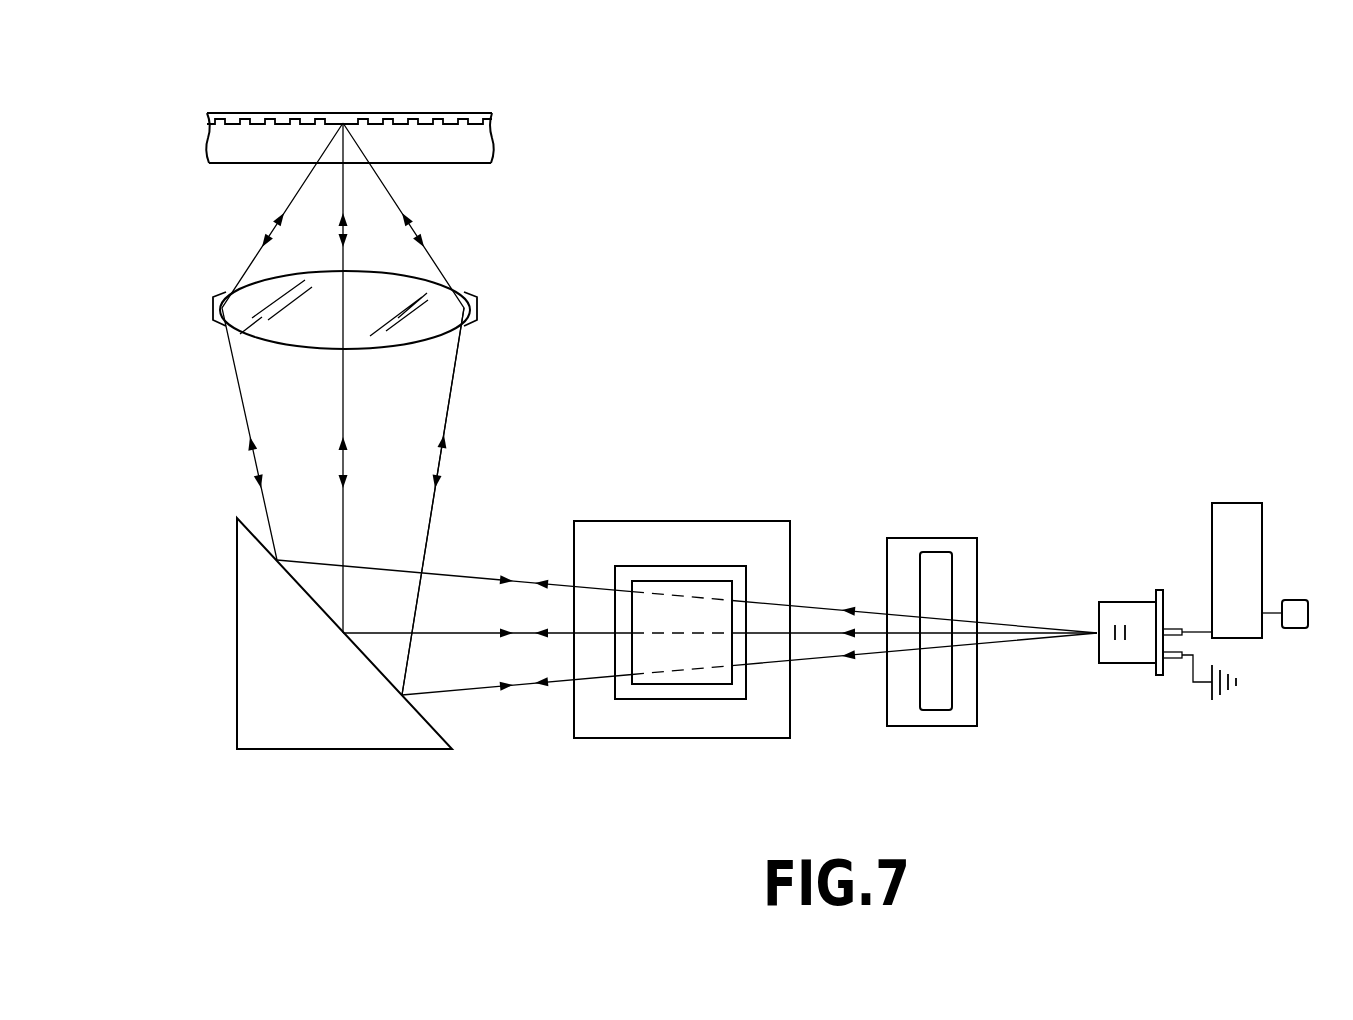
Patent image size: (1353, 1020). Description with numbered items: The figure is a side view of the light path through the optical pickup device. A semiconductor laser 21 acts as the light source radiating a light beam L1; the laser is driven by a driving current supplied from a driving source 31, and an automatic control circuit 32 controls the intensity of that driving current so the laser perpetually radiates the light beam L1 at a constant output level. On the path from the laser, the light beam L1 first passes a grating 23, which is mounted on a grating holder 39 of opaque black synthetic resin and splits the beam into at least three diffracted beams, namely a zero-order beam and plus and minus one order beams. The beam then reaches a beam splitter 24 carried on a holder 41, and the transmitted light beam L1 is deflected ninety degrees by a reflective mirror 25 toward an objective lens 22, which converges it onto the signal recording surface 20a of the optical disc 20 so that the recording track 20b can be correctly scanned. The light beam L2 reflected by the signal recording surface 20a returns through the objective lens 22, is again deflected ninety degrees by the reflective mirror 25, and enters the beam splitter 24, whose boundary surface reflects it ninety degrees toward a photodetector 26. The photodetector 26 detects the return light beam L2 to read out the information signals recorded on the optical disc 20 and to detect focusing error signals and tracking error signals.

The optical disc 20 is at (212, 112).
The signal recording surface 20a is at (292, 137).
The recording track 20b is at (448, 125).
The objective lens 22 is at (213, 310).
The reflective mirror 25 is at (250, 615).
The light beam L1 is at (458, 385).
The light beam L2 is at (437, 517).
The holder 41 is at (773, 517).
The beam splitter 24 is at (660, 568).
The photodetector 26 is at (723, 677).
The grating holder 39 is at (980, 703).
The grating 23 is at (938, 562).
The semiconductor laser 21 is at (1115, 605).
The automatic control circuit 32 is at (1250, 522).
The driving source 31 is at (1297, 628).